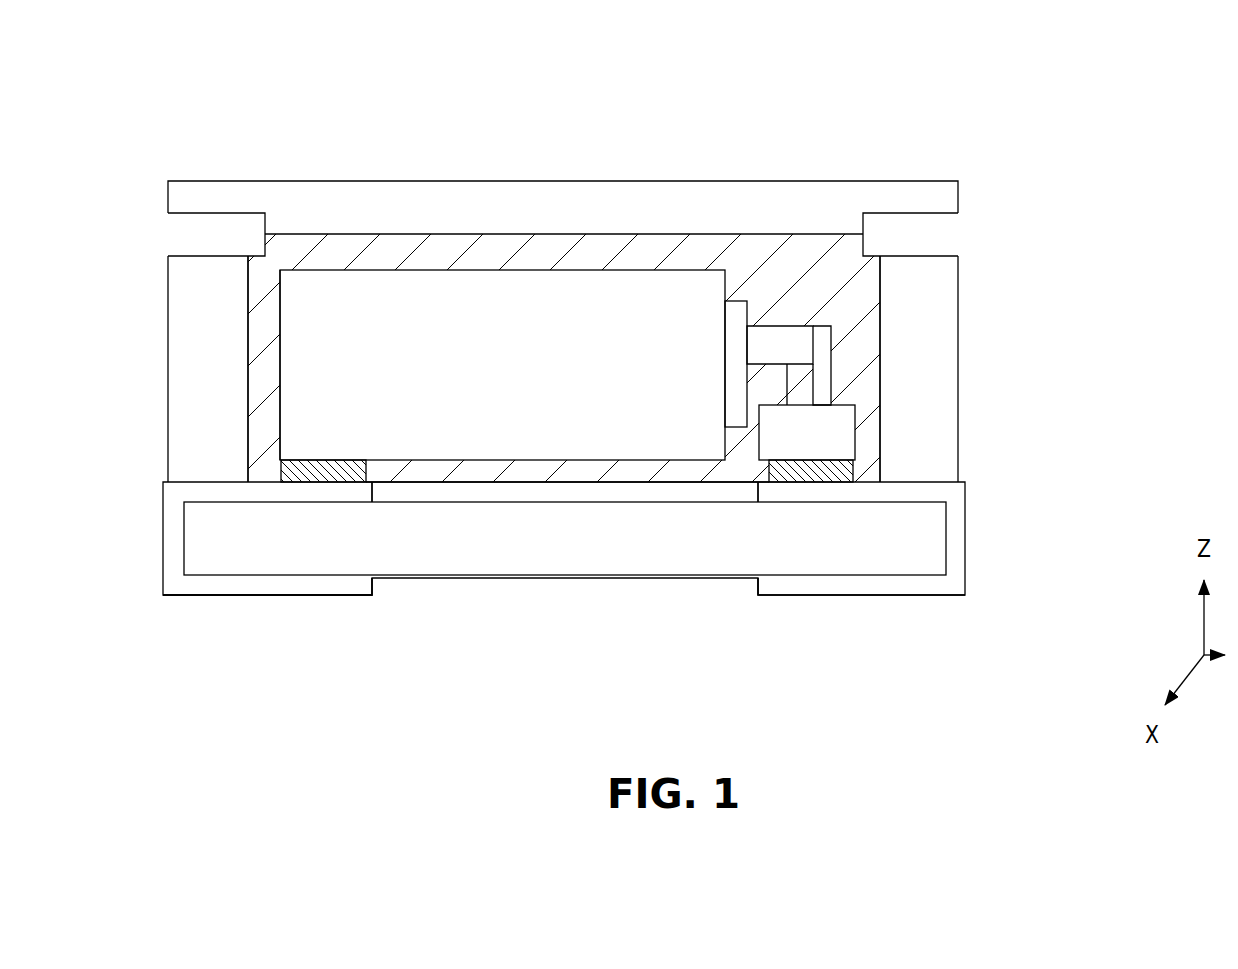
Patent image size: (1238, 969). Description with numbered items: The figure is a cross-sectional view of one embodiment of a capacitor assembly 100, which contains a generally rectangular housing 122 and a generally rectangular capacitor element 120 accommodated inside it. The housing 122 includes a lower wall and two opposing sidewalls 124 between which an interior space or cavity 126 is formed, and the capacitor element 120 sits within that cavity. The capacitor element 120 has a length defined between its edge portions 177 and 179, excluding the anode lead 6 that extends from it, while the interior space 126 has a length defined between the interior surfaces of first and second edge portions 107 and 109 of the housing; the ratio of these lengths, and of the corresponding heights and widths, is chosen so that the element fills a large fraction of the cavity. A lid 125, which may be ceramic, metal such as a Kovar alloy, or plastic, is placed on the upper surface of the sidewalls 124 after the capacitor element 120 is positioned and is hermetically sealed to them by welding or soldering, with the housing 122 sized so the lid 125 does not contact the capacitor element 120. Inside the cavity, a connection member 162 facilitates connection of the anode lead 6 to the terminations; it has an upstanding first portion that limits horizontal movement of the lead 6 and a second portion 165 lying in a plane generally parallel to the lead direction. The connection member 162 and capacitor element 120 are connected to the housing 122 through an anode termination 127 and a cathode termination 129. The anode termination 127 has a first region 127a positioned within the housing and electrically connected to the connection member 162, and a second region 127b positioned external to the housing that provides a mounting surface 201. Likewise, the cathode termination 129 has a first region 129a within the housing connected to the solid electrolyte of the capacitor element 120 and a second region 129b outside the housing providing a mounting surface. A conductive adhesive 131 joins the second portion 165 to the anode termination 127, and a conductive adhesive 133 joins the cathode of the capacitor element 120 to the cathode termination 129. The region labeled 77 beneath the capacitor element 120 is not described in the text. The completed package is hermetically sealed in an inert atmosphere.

The capacitor assembly 100 is at (968, 108).
The first edge portion 107 is at (250, 310).
The lid 125 is at (593, 212).
The interior space 126 is at (715, 263).
The sidewalls 124 is at (178, 298).
The housing 122 is at (147, 375).
The edge portion 177 is at (288, 345).
The capacitor element 120 is at (524, 382).
The edge portion 179 is at (730, 330).
The anode lead 6 is at (783, 359).
The connection member 162 is at (838, 392).
The second portion 165 is at (827, 446).
The second edge portion 109 is at (880, 429).
The conductive adhesive 133 is at (350, 475).
The conductive adhesive 131 is at (838, 478).
The bottom encapsulant layer 77 is at (656, 462).
The mounting surface 201 is at (893, 595).
The cathode termination 129 is at (146, 578).
The first region 129a is at (255, 492).
The second region 129b is at (295, 587).
The anode termination 127 is at (992, 545).
The first region 127a is at (798, 490).
The second region 127b is at (795, 582).